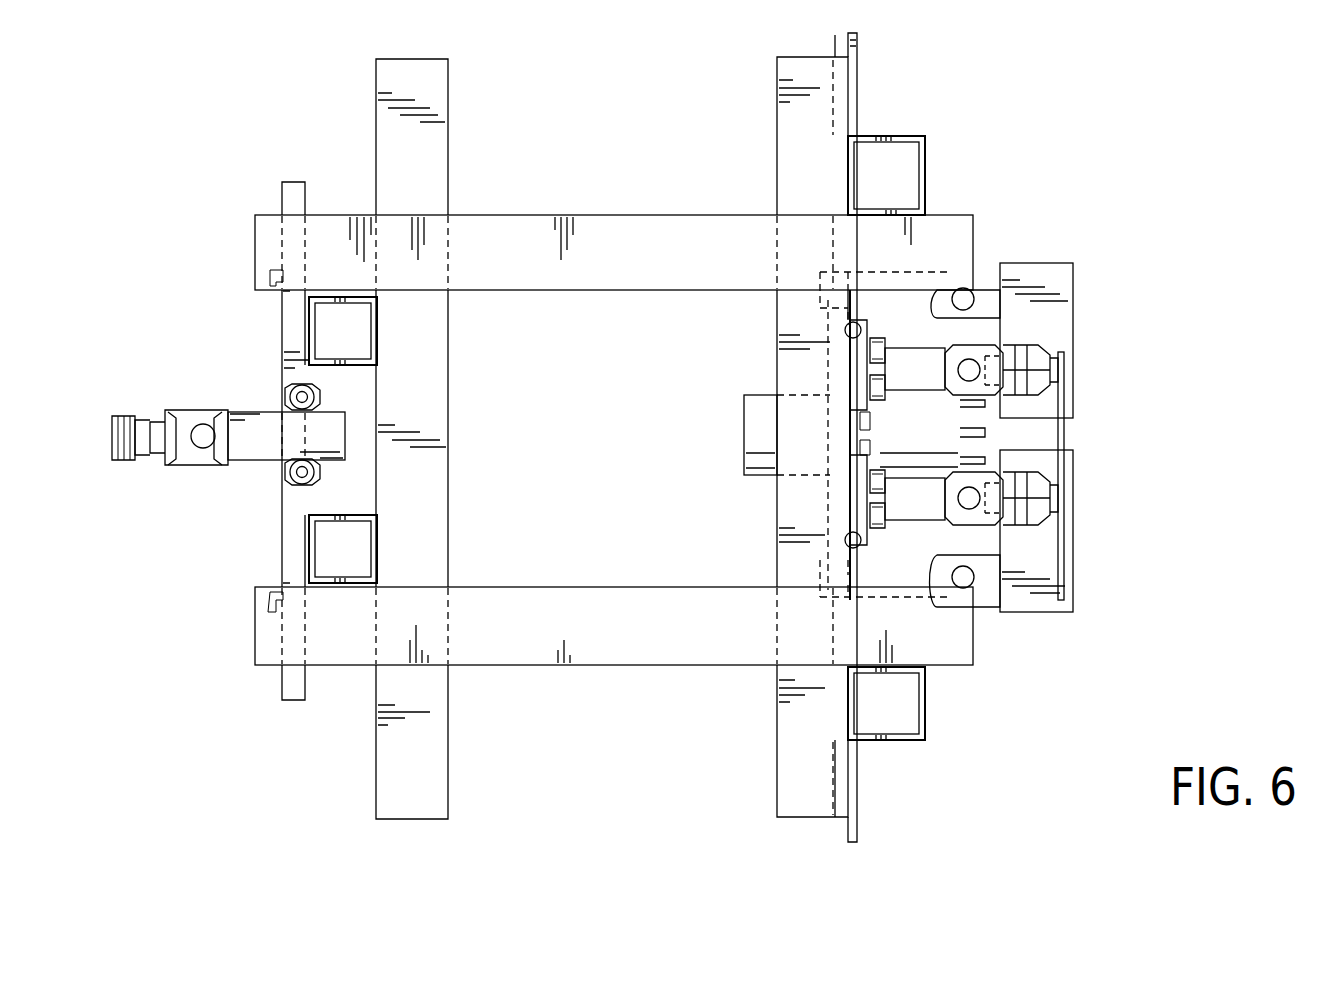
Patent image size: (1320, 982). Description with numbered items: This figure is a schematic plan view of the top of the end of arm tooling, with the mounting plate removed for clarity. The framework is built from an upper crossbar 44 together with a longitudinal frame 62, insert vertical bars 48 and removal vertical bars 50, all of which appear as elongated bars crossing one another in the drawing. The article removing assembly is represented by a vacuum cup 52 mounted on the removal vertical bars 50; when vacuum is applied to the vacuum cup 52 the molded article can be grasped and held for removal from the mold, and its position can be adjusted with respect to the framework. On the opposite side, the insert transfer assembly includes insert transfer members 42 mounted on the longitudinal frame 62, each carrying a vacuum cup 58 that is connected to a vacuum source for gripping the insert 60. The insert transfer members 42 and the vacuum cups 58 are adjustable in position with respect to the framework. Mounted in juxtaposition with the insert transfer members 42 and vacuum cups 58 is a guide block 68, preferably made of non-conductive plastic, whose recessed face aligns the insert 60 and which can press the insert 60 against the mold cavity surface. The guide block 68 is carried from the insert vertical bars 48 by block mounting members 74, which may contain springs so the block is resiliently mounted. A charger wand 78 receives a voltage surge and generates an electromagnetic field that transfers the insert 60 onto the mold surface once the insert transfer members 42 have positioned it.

The insert transfer member 42 is at (910, 356).
The upper crossbar 44 is at (333, 215).
The insert vertical bar 48 is at (925, 160).
The removal vertical bar 50 is at (309, 312).
The vacuum cup 52 is at (135, 412).
The vacuum cup 58 is at (1065, 345).
The insert 60 is at (1063, 432).
The longitudinal frame 62 is at (448, 157).
The guide block 68 is at (1040, 263).
The block mounting member 74 is at (903, 303).
The charger wand 78 is at (744, 428).